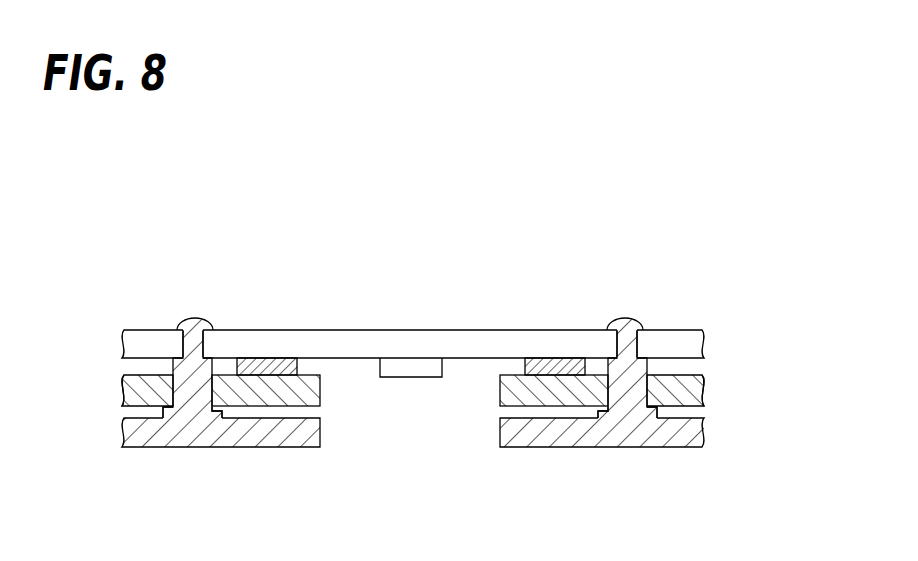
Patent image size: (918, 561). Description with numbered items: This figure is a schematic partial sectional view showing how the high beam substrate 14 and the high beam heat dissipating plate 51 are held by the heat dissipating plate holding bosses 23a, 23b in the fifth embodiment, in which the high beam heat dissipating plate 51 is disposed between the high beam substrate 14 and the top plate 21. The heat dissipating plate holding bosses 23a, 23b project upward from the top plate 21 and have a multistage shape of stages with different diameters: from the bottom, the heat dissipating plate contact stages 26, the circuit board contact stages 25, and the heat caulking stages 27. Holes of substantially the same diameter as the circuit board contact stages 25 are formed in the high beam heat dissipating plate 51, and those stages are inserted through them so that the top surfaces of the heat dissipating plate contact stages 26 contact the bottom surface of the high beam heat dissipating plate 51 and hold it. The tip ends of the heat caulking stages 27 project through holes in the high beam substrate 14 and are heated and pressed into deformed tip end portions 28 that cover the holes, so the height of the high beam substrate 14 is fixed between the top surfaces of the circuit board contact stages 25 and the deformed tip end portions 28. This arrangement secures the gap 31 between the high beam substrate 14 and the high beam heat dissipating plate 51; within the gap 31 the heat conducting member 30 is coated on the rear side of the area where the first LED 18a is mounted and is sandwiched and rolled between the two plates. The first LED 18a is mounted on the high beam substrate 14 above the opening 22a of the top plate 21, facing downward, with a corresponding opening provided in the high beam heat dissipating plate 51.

The high beam substrate 14 is at (695, 344).
The first LED 18a is at (411, 372).
The top plate 21 is at (135, 435).
The opening 22a is at (356, 434).
The heat dissipating plate holding boss 23a is at (196, 296).
The heat dissipating plate holding boss 23b is at (626, 296).
The circuit board contact stage 25 is at (168, 362).
The heat dissipating plate contact stage 26 is at (218, 411).
The heat caulking stage 27 is at (204, 336).
The deformed tip end portion 28 is at (185, 322).
The heat conducting member 30 is at (270, 364).
The gap 31 is at (690, 371).
The high beam heat dissipating plate 51 is at (122, 390).